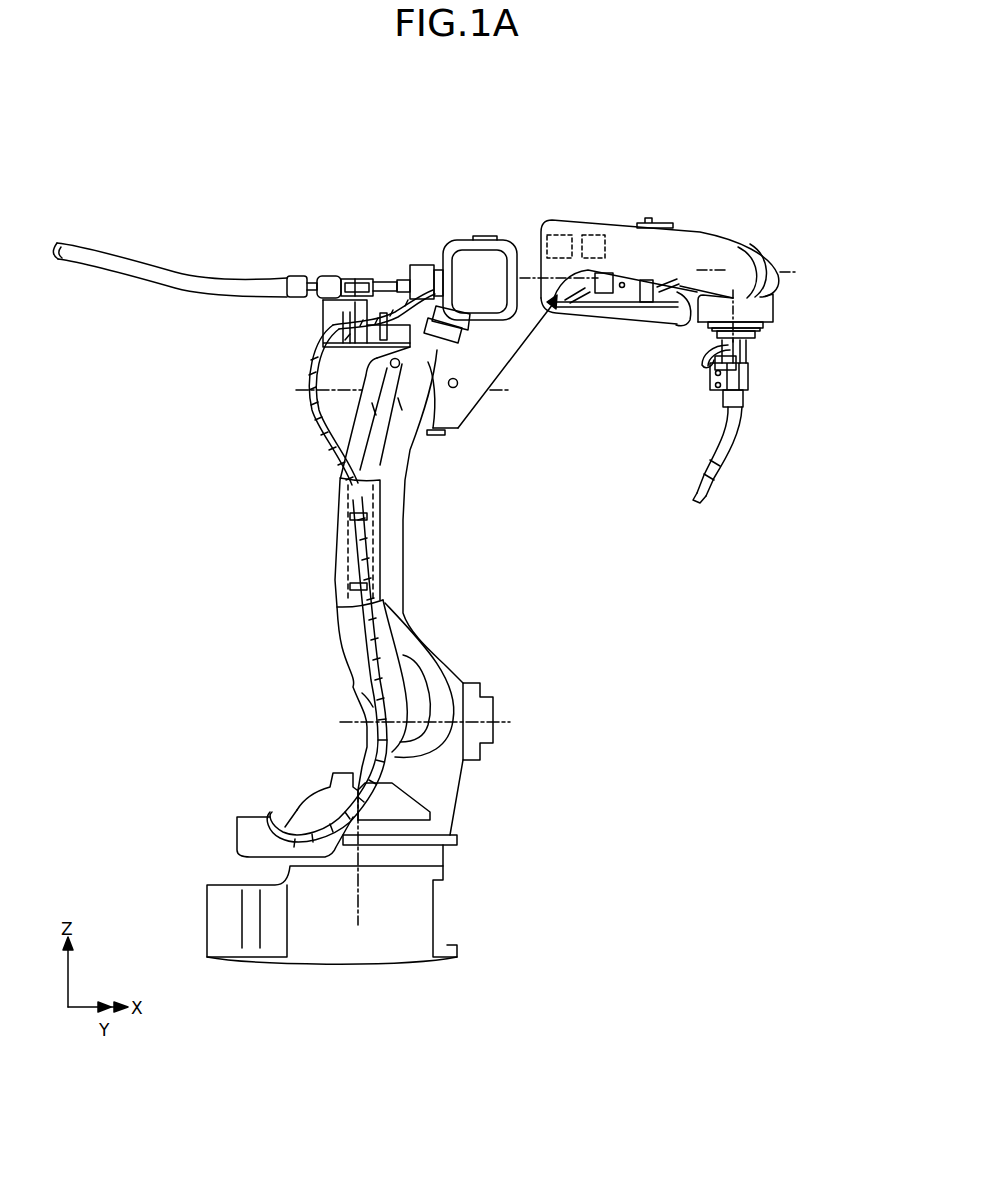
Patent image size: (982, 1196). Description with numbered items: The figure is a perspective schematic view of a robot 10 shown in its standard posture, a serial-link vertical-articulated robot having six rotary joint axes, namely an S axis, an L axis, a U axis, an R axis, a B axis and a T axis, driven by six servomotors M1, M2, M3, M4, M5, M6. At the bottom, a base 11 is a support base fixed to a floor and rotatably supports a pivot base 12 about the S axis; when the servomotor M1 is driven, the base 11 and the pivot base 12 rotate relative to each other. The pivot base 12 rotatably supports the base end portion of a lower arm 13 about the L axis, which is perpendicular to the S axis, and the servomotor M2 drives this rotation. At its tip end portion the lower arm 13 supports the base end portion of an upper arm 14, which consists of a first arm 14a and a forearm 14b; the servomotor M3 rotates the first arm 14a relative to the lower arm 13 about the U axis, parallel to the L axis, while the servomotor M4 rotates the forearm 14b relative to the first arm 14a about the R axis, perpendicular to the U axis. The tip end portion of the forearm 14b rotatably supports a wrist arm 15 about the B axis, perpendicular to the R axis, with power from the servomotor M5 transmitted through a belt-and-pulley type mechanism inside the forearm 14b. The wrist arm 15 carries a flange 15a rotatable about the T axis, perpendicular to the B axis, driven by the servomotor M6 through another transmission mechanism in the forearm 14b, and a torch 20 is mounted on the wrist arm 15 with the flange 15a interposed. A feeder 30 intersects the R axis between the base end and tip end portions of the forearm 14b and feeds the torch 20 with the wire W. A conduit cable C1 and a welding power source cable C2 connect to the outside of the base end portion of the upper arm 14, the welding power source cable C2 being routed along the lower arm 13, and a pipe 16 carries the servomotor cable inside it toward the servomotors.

The robot 10 is at (344, 156).
The base 11 is at (437, 910).
The pivot base 12 is at (458, 790).
The lower arm 13 is at (395, 566).
The upper arm 14 is at (632, 430).
The first arm 14a is at (503, 357).
The forearm 14b is at (558, 315).
The wrist arm 15 is at (760, 313).
The flange 15a is at (762, 327).
The pipe 16 is at (383, 668).
The torch 20 is at (738, 432).
The feeder 30 is at (630, 320).
The conduit cable C1 is at (170, 290).
The welding power source cable C2 is at (318, 425).
The servomotor M1 is at (330, 788).
The servomotor M2 is at (485, 708).
The servomotor M3 is at (457, 432).
The servomotor M4 is at (418, 265).
The servomotor M5 is at (556, 235).
The servomotor M6 is at (594, 235).
The S axis S is at (343, 775).
The L axis L is at (417, 724).
The U axis U is at (391, 392).
The R axis R is at (525, 278).
The B axis B is at (754, 274).
The T axis T is at (750, 346).
The wire W is at (700, 500).